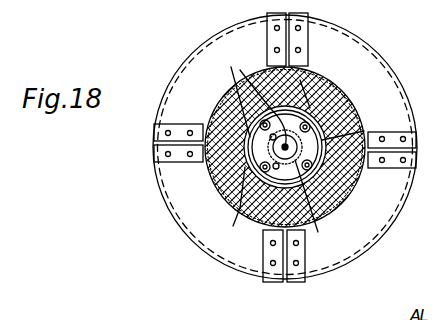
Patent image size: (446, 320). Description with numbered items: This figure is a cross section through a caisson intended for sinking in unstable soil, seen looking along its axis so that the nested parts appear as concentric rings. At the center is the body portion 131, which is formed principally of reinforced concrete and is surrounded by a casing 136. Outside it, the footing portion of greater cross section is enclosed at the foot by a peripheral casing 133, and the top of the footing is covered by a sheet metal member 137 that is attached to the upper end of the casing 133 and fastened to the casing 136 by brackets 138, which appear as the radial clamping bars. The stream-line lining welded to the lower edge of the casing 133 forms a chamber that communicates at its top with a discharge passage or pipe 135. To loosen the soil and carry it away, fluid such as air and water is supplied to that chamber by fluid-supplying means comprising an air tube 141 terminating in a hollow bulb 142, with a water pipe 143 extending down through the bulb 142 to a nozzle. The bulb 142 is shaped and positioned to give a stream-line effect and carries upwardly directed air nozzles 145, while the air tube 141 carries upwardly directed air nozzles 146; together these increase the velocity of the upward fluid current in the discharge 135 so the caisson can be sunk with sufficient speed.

The body portion 131 is at (327, 87).
The peripheral casing 133 is at (166, 205).
The discharge passage or pipe 135 is at (232, 120).
The casing 136 is at (212, 108).
The sheet metal member 137 is at (185, 82).
The brackets 138 is at (305, 40).
The air tube 141 is at (316, 206).
The hollow bulb 142 is at (231, 208).
The water pipe 143 is at (285, 147).
The air nozzles 145 is at (343, 111).
The air nozzles 146 is at (250, 99).